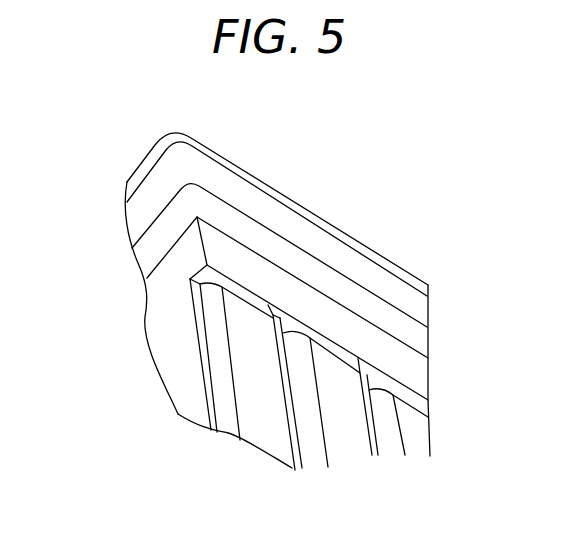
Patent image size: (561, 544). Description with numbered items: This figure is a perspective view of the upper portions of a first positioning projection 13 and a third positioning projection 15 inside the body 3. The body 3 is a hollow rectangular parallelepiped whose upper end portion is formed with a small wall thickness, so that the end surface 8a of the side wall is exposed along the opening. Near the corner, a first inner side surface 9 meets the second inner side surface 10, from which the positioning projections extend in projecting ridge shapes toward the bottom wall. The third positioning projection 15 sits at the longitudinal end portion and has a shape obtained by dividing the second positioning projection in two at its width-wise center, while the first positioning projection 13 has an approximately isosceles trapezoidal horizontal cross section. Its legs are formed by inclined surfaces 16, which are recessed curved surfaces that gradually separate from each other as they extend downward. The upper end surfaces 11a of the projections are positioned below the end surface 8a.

The body 3 is at (142, 163).
The end surface 8a is at (375, 310).
The first inner side surface 9 is at (168, 297).
The second inner side surface 10 is at (383, 340).
The upper end surface 11a is at (387, 381).
The first positioning projection 13 is at (287, 322).
The third positioning projection 15 is at (207, 265).
The inclined surface 16 is at (226, 403).